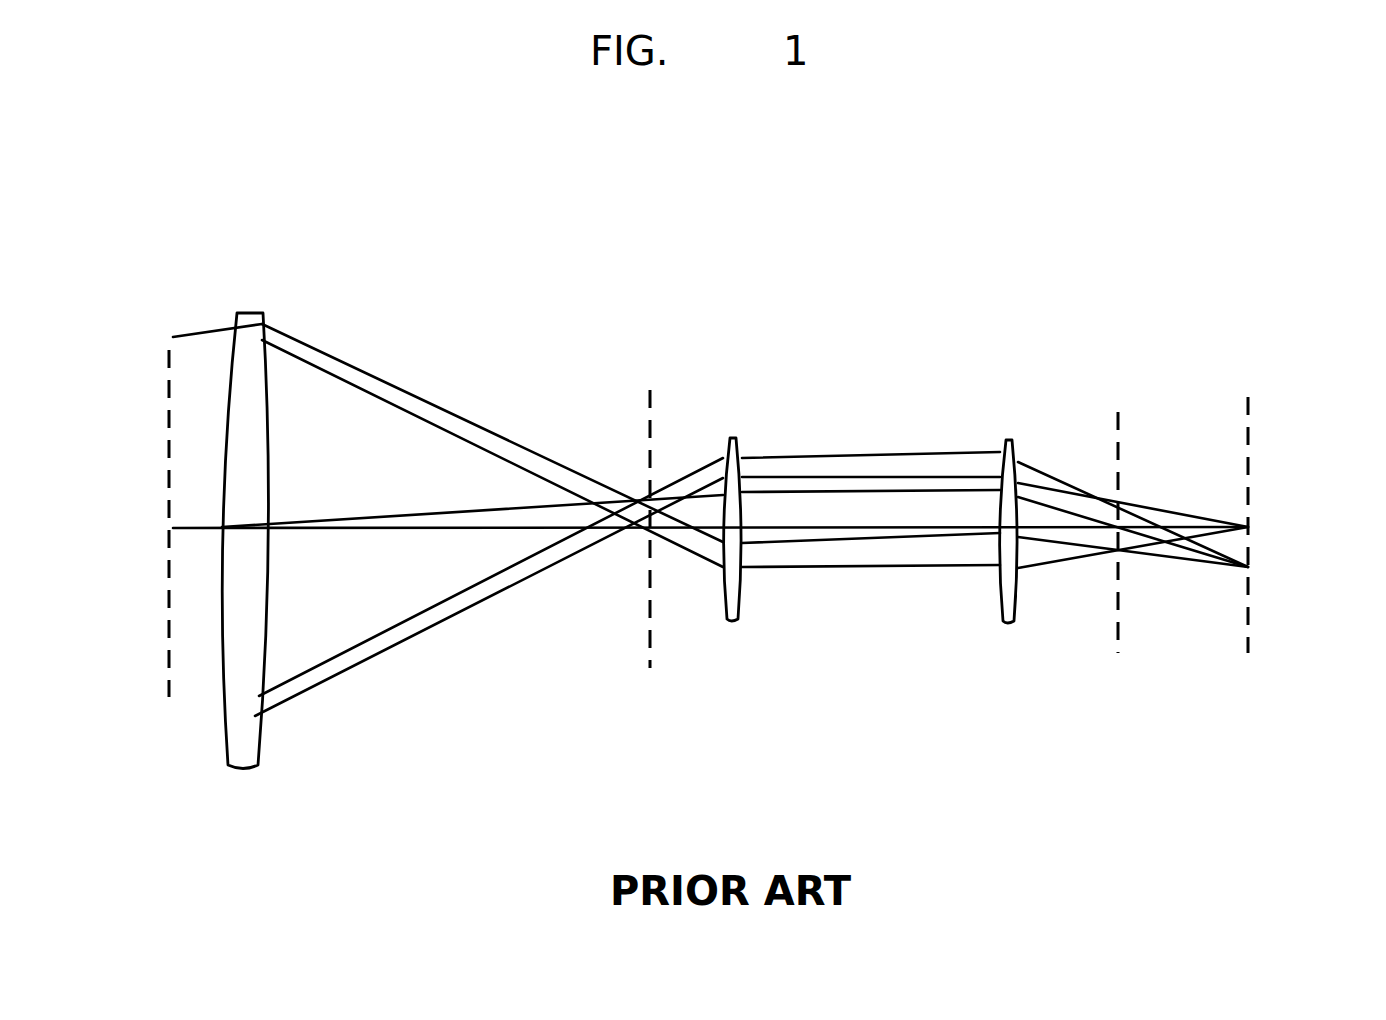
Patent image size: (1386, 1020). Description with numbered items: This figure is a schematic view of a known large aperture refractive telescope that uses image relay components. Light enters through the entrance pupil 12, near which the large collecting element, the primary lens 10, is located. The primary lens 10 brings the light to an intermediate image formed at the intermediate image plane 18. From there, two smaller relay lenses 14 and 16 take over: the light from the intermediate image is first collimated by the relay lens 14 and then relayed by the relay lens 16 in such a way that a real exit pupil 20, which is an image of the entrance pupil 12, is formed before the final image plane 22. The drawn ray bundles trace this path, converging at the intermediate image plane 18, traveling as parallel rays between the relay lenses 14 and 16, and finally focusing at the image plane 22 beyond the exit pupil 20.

The primary lens 10 is at (268, 407).
The entrance pupil 12 is at (163, 360).
The relay lens 14 is at (745, 453).
The relay lens 16 is at (1022, 470).
The intermediate image plane 18 is at (645, 420).
The exit pupil 20 is at (1128, 427).
The image plane 22 is at (1260, 477).